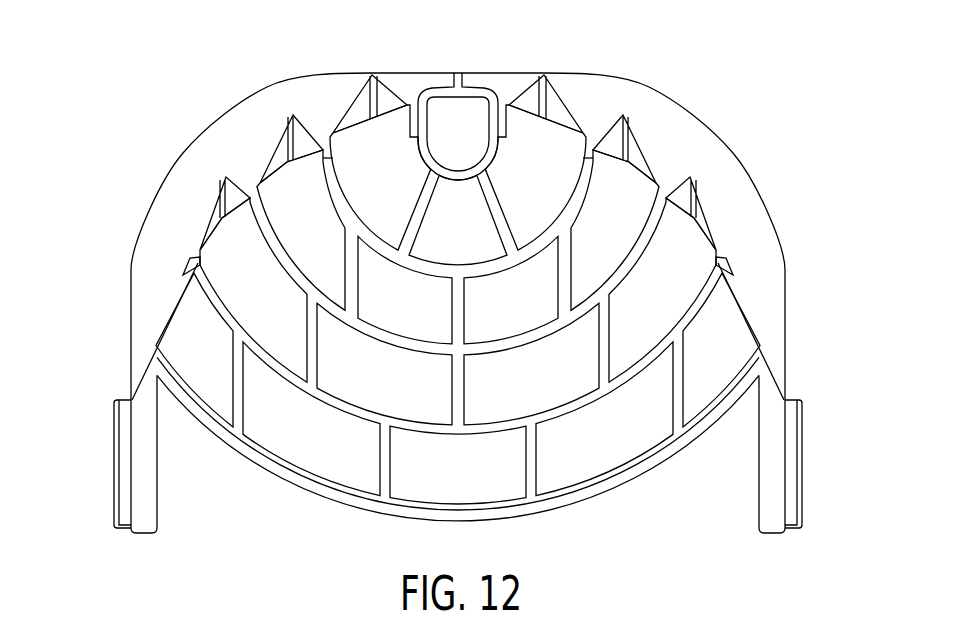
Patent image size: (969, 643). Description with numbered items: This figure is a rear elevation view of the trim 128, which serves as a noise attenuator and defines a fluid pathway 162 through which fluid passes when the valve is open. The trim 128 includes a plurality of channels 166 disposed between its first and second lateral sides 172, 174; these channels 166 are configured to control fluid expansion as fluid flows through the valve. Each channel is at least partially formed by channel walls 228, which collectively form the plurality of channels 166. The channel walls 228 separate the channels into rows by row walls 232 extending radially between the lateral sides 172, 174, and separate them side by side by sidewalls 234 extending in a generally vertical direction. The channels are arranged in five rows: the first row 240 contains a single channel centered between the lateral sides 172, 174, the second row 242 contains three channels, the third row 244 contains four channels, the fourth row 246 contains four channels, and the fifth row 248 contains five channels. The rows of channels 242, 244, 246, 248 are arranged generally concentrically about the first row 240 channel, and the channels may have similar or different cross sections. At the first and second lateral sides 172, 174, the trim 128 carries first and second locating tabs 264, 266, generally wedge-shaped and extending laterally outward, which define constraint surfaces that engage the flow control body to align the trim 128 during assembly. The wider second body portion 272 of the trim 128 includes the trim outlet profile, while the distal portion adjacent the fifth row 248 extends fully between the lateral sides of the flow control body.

The trim 128 is at (737, 138).
The fluid pathway 162 is at (572, 467).
The plurality of channels 166 is at (496, 396).
The first lateral side 172 is at (104, 364).
The second lateral side 174 is at (807, 300).
The channel walls 228 is at (307, 388).
The row walls 232 is at (388, 342).
The sidewalls 234 is at (670, 394).
The first row 240 is at (449, 125).
The second row 242 is at (365, 158).
The third row 244 is at (295, 192).
The fourth row 246 is at (232, 252).
The fifth row 248 is at (192, 325).
The first locating tab 264 is at (117, 466).
The second locating tab 266 is at (800, 467).
The second body portion 272 is at (777, 224).